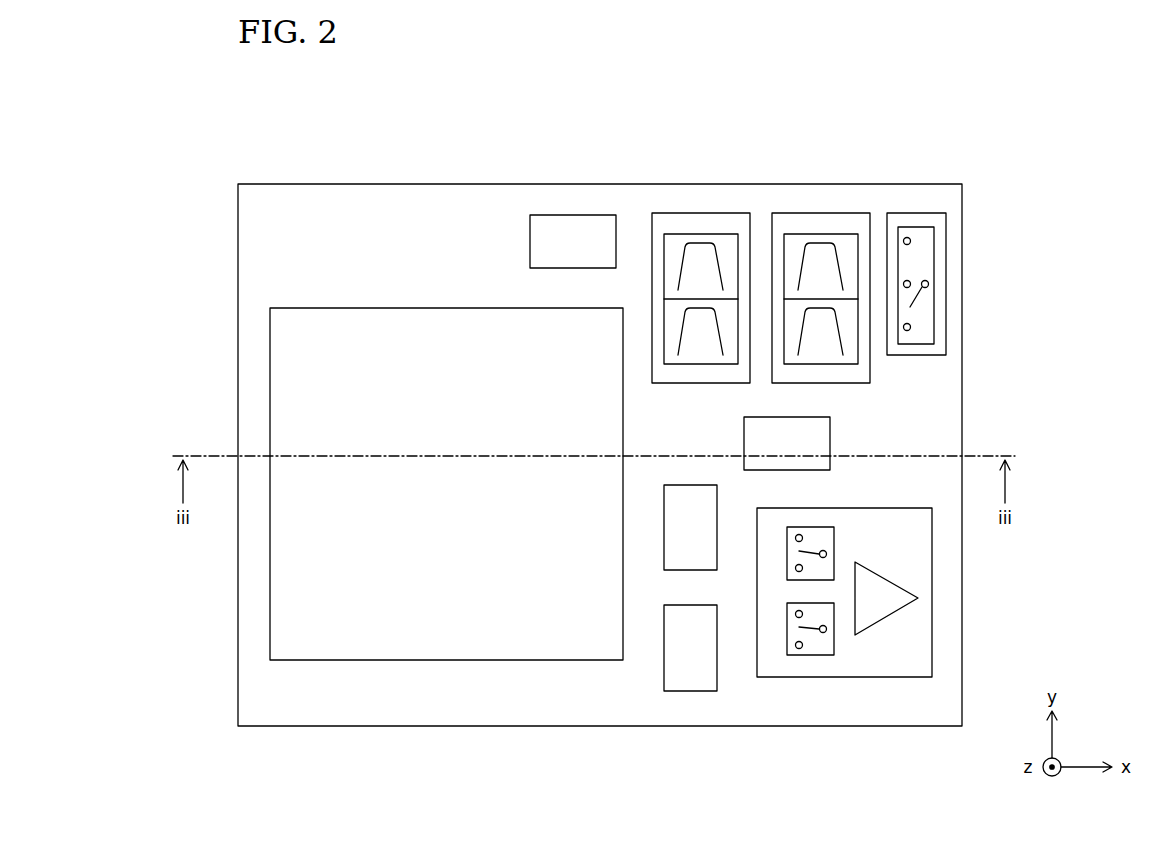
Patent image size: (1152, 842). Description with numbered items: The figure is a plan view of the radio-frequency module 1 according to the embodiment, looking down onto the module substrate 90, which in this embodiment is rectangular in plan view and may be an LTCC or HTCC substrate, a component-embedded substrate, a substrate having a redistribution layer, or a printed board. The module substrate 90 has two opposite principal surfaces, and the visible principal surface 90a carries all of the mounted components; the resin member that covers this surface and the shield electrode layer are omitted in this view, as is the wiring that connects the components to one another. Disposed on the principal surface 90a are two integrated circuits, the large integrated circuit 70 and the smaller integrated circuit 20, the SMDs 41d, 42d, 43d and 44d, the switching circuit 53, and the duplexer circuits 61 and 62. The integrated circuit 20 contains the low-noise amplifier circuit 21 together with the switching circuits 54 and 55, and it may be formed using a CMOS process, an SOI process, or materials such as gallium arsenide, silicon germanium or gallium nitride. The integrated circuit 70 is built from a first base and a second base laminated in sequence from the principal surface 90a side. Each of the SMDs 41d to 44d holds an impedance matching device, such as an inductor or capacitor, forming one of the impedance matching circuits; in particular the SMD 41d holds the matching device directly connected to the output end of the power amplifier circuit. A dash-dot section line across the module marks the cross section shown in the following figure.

The radio-frequency module 1 is at (943, 137).
The module substrate 90 is at (601, 184).
The principal surface 90a is at (293, 197).
The integrated circuit 70 is at (423, 306).
The SMD 41d is at (530, 247).
The SMD 42d is at (717, 621).
The SMD 43d is at (744, 437).
The SMD 44d is at (717, 520).
The duplexer circuit 61 is at (820, 211).
The duplexer circuit 62 is at (700, 211).
The switching circuit 53 is at (946, 290).
The integrated circuit 20 is at (869, 508).
The low-noise amplifier circuit 21 is at (884, 580).
The switching circuit 54 is at (834, 546).
The switching circuit 55 is at (834, 646).